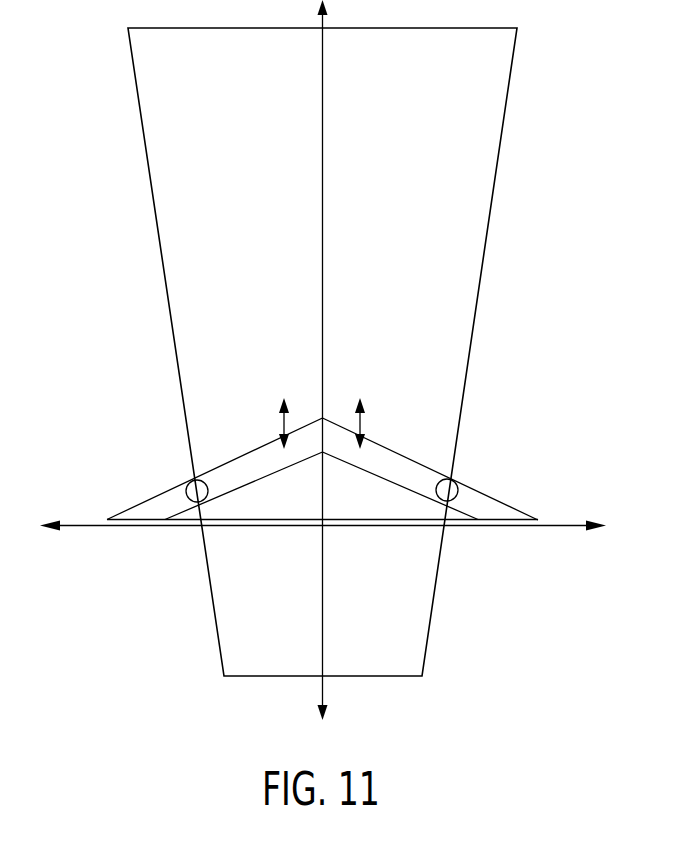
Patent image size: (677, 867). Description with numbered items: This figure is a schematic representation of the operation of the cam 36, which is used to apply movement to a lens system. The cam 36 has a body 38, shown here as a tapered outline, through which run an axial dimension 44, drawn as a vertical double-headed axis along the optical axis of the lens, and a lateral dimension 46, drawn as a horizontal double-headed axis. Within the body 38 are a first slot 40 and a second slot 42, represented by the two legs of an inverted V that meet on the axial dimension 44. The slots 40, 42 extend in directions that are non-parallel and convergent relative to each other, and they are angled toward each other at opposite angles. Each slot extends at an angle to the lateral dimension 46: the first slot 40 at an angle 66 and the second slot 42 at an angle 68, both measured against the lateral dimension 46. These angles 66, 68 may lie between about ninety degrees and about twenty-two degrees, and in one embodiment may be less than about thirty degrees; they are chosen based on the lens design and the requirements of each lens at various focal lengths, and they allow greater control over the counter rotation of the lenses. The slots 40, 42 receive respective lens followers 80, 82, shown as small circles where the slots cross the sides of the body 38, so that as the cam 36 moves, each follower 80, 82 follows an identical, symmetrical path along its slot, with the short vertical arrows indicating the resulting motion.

The cam 36 is at (412, 418).
The body 38 is at (235, 521).
The first slot 40 is at (255, 478).
The second slot 42 is at (402, 481).
The axial dimension 44 is at (323, 25).
The lateral dimension 46 is at (567, 525).
The angle of first slot 66 is at (218, 514).
The angle of second slot 68 is at (427, 520).
The first lens follower 80 is at (186, 483).
The second lens follower 82 is at (458, 485).